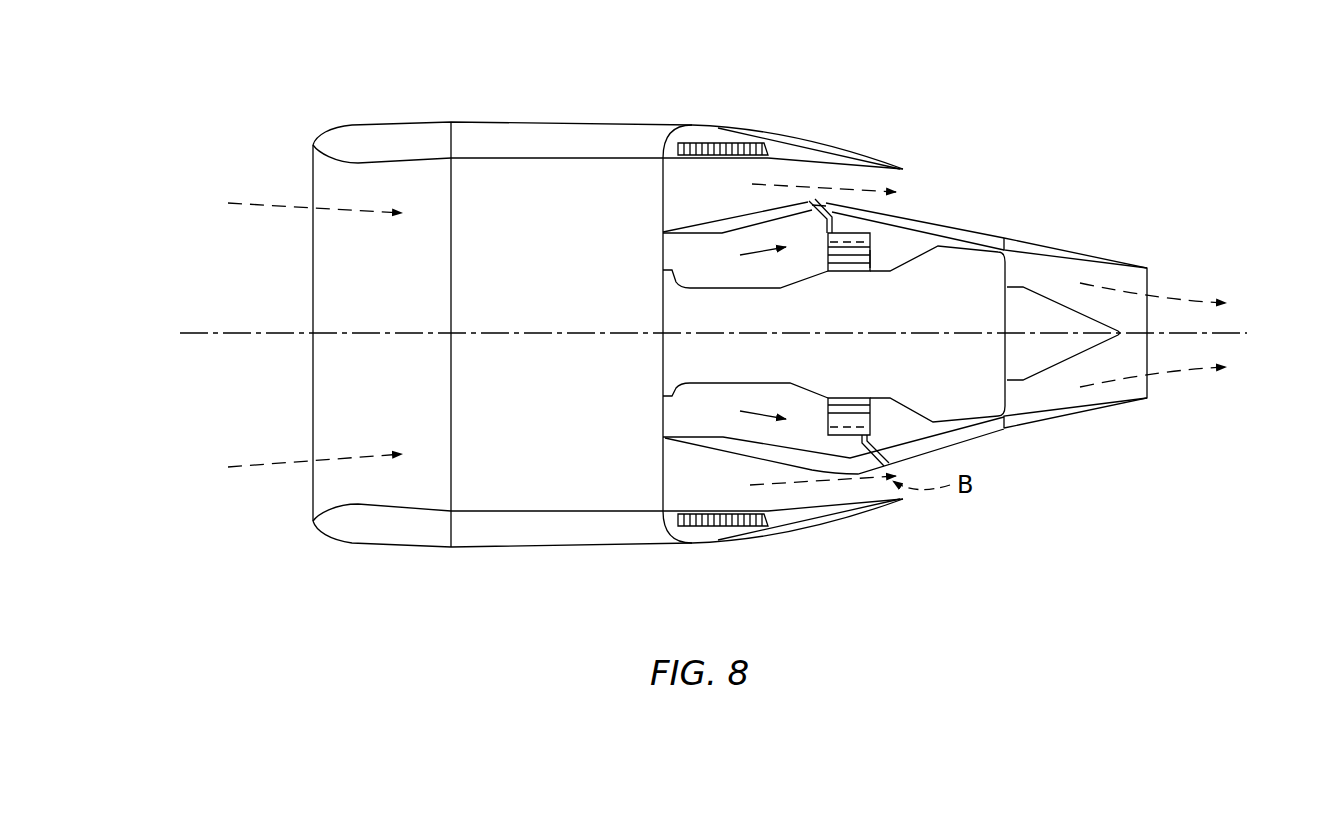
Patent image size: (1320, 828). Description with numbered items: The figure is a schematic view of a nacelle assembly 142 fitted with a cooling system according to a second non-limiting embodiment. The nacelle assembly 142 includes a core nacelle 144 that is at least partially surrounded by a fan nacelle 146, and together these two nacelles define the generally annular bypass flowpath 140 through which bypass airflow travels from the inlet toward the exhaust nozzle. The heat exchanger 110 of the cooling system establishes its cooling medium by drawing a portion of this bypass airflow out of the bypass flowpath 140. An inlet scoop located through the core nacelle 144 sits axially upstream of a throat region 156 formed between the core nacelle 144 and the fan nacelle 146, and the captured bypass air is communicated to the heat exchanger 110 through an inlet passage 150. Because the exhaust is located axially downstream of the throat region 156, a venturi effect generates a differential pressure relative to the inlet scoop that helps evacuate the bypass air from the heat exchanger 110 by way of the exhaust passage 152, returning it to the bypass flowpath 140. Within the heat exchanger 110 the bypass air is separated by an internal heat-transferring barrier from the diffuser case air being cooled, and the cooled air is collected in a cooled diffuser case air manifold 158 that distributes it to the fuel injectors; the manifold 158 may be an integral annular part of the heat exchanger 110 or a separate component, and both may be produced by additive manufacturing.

The nacelle assembly 142 is at (1097, 113).
The core nacelle 144 is at (1027, 250).
The fan nacelle 146 is at (649, 140).
The bypass flowpath 140 is at (732, 200).
The heat exchanger 110 is at (848, 225).
The inlet passage 150 is at (825, 214).
The exhaust passage 152 is at (877, 446).
The throat region 156 is at (836, 206).
The cooled diffuser case air manifold 158 is at (871, 258).